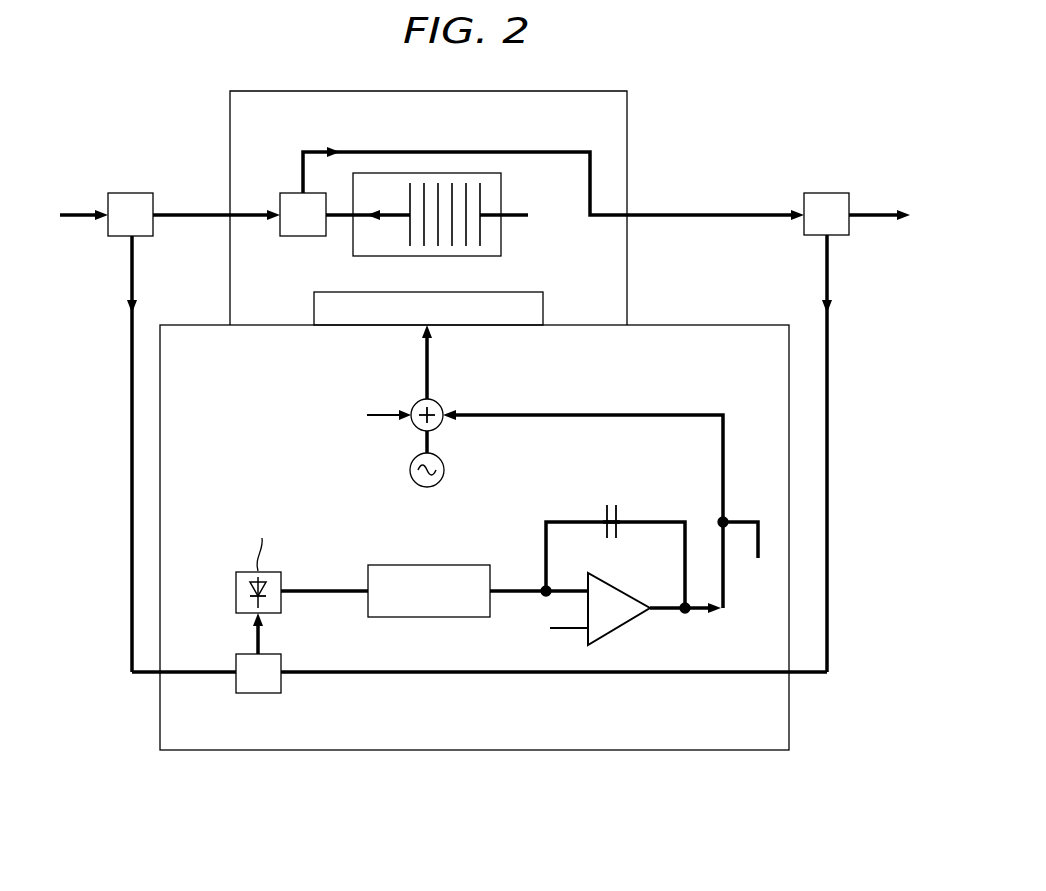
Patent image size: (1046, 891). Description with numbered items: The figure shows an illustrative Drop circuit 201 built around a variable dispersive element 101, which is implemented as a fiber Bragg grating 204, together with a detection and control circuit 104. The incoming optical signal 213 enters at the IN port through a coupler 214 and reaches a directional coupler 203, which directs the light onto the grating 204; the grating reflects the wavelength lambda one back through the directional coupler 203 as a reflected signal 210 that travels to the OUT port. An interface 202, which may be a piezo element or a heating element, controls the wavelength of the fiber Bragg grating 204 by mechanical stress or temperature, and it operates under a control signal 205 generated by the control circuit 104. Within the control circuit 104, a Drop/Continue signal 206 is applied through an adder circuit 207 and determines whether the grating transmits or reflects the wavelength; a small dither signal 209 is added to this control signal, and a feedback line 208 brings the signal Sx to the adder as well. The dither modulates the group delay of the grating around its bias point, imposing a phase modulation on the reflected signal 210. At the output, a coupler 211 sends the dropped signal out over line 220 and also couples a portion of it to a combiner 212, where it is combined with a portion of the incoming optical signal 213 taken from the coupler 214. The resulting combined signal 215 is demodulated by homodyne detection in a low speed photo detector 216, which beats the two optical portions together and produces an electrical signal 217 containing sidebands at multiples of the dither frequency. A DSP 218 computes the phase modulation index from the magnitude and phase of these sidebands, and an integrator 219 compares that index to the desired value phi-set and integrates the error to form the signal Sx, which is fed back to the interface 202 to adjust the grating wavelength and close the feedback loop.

The variable dispersive element 101 is at (502, 240).
The detection and control circuit 104 is at (789, 713).
The Drop circuit 201 is at (628, 265).
The interface 202 is at (545, 312).
The directional coupler 203 is at (287, 192).
The fiber Bragg grating 204 is at (482, 191).
The control signal 205 is at (431, 362).
The Drop/Continue signal 206 is at (326, 400).
The adder circuit 207 is at (440, 428).
The feedback signal line 208 is at (588, 412).
The dither signal 209 is at (410, 470).
The reflected signal 210 is at (391, 212).
The coupler 211 is at (826, 192).
The combiner 212 is at (283, 687).
The incoming optical signal 213 is at (72, 211).
The coupler 214 is at (131, 192).
The combined signal 215 is at (261, 641).
The photo detector 216 is at (235, 592).
The electrical signal 217 is at (333, 588).
The DSP 218 is at (424, 564).
The integrator 219 is at (622, 627).
The output line 220 is at (877, 212).